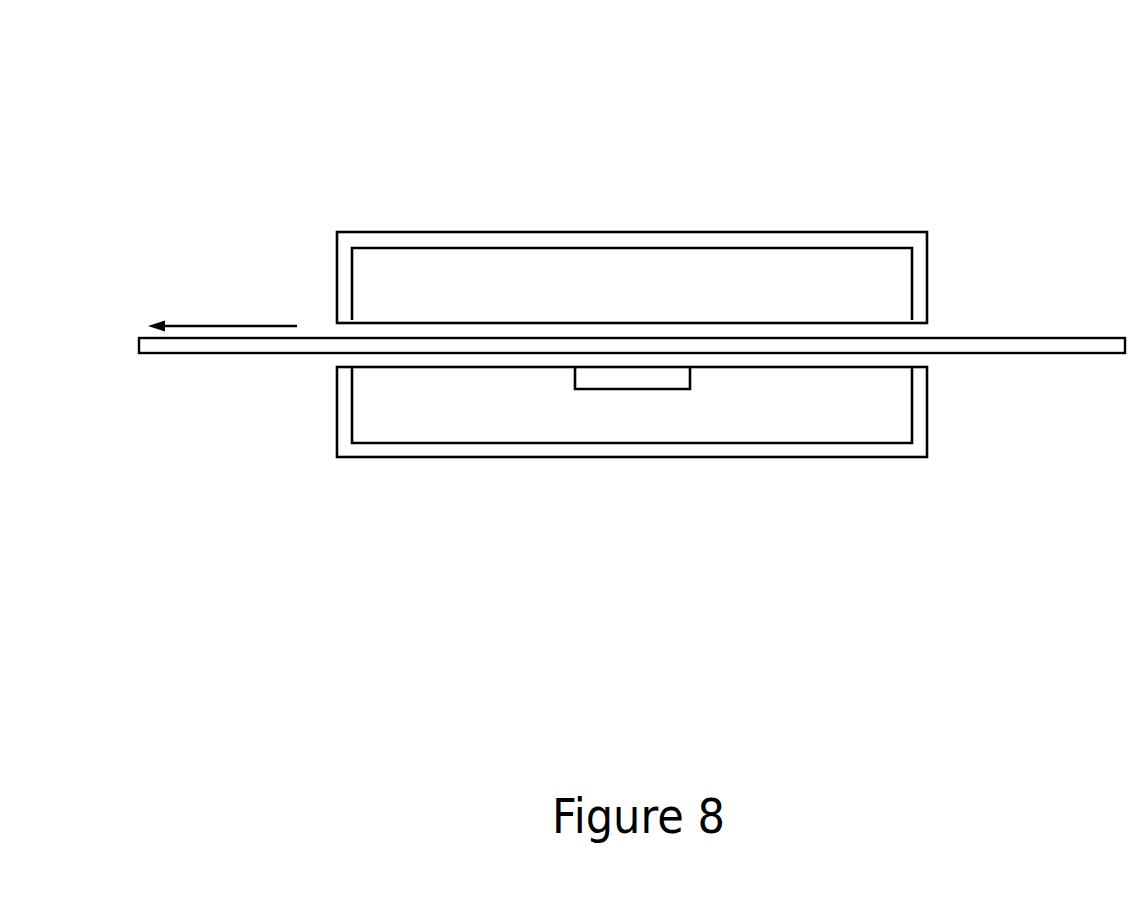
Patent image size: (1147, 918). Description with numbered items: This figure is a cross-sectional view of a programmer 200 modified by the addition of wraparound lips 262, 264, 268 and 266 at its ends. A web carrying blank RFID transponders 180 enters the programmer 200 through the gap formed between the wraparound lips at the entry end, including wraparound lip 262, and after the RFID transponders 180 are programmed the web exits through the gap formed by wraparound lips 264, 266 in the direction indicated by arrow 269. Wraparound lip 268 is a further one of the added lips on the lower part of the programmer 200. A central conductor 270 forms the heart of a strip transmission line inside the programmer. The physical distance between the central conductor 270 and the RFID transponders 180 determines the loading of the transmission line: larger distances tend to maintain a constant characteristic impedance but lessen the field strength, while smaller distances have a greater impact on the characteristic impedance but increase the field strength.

The programmer 200 is at (455, 232).
The wraparound lip 264 is at (337, 285).
The wraparound lip 262 is at (927, 252).
The wraparound lip 268 is at (337, 437).
The wraparound lip 266 is at (928, 412).
The central conductor 270 is at (630, 377).
The RFID transponder 180 is at (1035, 338).
The arrow 269 is at (185, 325).